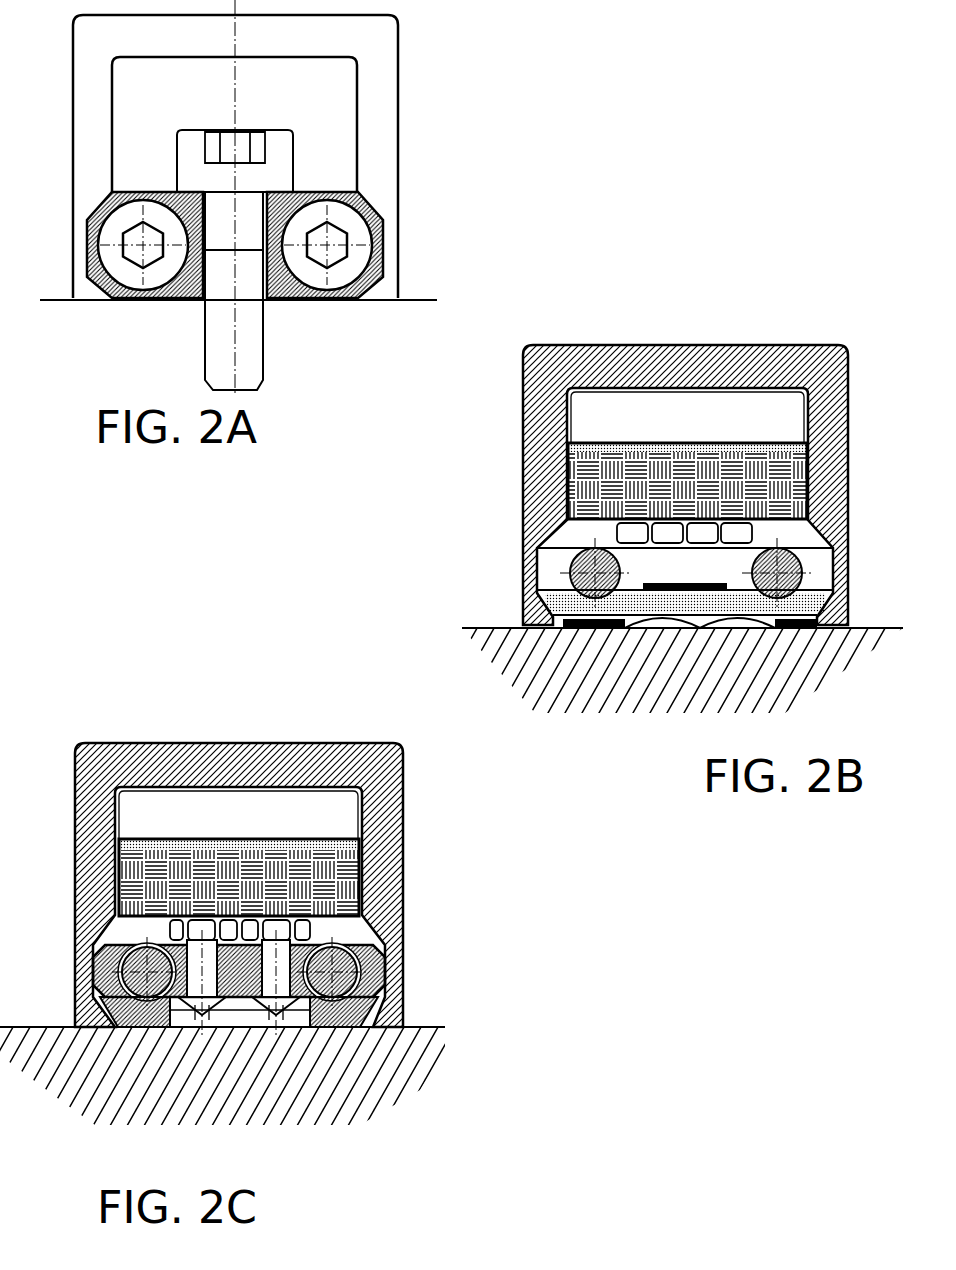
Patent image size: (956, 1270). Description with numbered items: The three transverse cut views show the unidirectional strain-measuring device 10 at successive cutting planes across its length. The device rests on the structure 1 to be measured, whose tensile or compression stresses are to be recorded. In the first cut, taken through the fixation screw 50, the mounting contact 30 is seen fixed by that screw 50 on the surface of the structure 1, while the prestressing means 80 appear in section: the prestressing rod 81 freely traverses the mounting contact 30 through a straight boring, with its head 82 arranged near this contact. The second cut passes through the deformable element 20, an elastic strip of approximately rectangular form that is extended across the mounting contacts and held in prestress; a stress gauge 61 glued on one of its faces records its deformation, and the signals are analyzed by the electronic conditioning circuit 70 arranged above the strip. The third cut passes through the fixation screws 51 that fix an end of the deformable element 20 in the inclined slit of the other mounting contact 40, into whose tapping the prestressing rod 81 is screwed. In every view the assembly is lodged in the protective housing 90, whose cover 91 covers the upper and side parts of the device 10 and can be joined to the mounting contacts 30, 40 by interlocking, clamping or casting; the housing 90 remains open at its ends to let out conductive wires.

In FIG. 2B, the structure to be measured 1 is at (797, 688).
In FIG. 2C, the structure to be measured 1 is at (422, 1088).
In FIG. 2B, the strain-measuring device 10 is at (634, 427).
In FIG. 2C, the strain-measuring device 10 is at (293, 854).
In FIG. 2B, the deformable element 20 is at (647, 592).
In FIG. 2C, the deformable element 20 is at (252, 1010).
In FIG. 2A, the mounting contact 30 is at (303, 302).
In FIG. 2B, the mounting contact 40 is at (588, 535).
In FIG. 2C, the mounting contact 40 is at (377, 980).
In FIG. 2A, the fixation screw 50 is at (253, 338).
In FIG. 2C, the fixation screw 51 is at (187, 1027).
In FIG. 2B, the stress gauge 61 is at (713, 590).
In FIG. 2B, the electronic conditioning circuit 70 is at (572, 470).
In FIG. 2C, the electronic conditioning circuit 70 is at (365, 852).
In FIG. 2A, the prestressing means 80 is at (362, 218).
In FIG. 2B, the prestressing rod 81 is at (568, 558).
In FIG. 2C, the prestressing rod 81 is at (372, 918).
In FIG. 2A, the head 82 is at (357, 256).
In FIG. 2A, the protective housing 90 is at (403, 78).
In FIG. 2B, the protective housing 90 is at (618, 341).
In FIG. 2C, the protective housing 90 is at (192, 741).
In FIG. 2A, the cover 91 is at (388, 160).
In FIG. 2B, the cover 91 is at (760, 370).
In FIG. 2C, the cover 91 is at (253, 753).